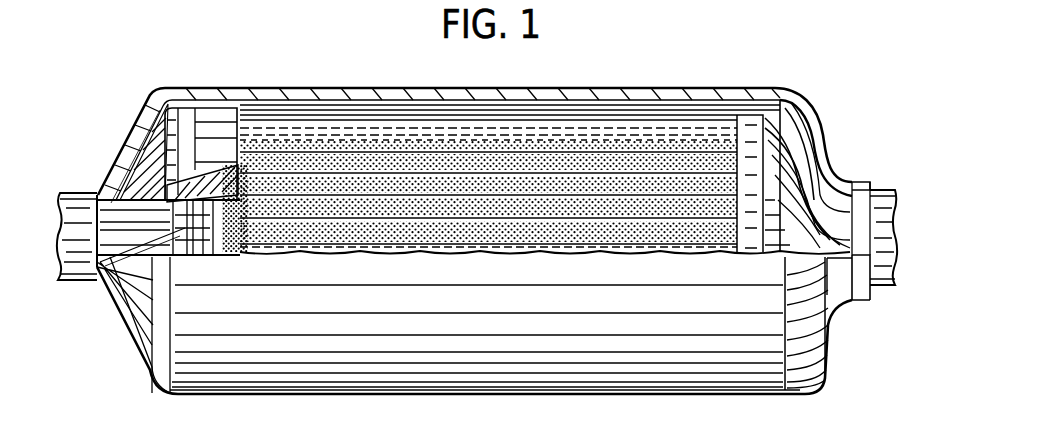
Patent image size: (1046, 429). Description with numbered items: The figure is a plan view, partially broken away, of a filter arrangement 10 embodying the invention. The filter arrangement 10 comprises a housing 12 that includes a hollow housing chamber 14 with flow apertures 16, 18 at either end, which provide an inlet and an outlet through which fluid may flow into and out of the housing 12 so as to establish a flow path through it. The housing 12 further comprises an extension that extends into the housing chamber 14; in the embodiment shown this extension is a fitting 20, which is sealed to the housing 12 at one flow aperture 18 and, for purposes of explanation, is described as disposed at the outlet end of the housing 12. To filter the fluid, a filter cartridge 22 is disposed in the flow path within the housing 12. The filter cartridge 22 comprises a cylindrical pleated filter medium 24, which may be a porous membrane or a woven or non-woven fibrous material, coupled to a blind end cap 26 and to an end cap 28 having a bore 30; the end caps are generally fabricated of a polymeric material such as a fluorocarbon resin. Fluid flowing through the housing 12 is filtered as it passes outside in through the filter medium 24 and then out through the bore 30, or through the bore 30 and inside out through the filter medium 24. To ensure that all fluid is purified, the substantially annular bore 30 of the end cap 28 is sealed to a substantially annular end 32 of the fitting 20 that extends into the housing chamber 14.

The filter arrangement 10 is at (735, 77).
The housing 12 is at (166, 90).
The housing chamber 14 is at (152, 127).
The flow aperture 16 is at (900, 277).
The flow aperture 18 is at (62, 277).
The fitting 20 is at (77, 193).
The filter cartridge 22 is at (290, 112).
The filter medium 24 is at (633, 130).
The blind end cap 26 is at (800, 133).
The end cap 28 is at (213, 118).
The bore 30 is at (230, 167).
The end of fitting 32 is at (108, 264).